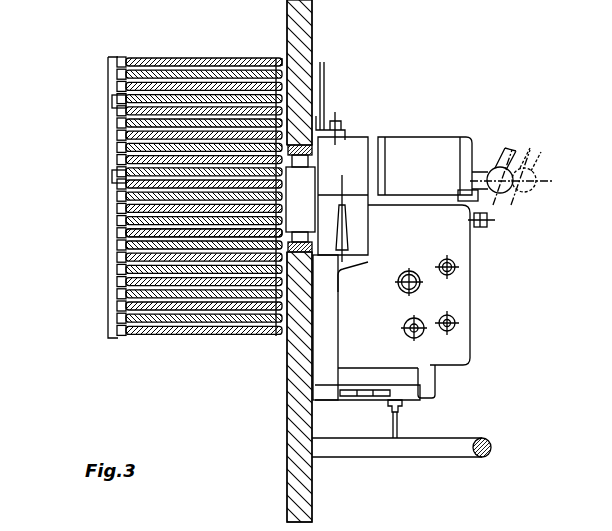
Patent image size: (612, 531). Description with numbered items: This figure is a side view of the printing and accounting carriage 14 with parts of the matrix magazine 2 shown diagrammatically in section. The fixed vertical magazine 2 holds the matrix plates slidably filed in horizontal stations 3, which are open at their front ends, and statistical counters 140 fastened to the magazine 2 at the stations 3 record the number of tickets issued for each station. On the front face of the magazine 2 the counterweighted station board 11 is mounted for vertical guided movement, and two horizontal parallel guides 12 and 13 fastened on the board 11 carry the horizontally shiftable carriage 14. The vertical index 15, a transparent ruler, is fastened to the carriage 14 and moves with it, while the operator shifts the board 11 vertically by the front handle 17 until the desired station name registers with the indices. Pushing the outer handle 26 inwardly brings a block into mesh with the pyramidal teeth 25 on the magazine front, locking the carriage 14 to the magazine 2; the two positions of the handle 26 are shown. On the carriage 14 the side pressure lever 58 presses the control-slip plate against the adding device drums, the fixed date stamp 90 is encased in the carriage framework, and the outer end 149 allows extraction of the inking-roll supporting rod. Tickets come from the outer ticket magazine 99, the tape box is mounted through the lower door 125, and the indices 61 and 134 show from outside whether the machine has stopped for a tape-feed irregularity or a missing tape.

The matrix magazine 2 is at (178, 348).
The station 3 is at (127, 238).
The station board 11 is at (310, 26).
The horizontal guide 12 is at (313, 151).
The horizontal guide 13 is at (313, 252).
The printing and accounting carriage 14 is at (472, 294).
The vertical index 15 is at (326, 88).
The front handle 17 is at (470, 458).
The pyramidal teeth 25 is at (284, 60).
The outer handle 26 is at (512, 190).
The side pressure lever 58 is at (346, 229).
The index 61 is at (412, 332).
The fixed date stamp 90 is at (460, 196).
The outer ticket magazine 99 is at (312, 370).
The lower door 125 is at (405, 395).
The index 134 is at (405, 278).
The statistical counter 140 is at (113, 101).
The outer end of supporting rod 149 is at (491, 223).